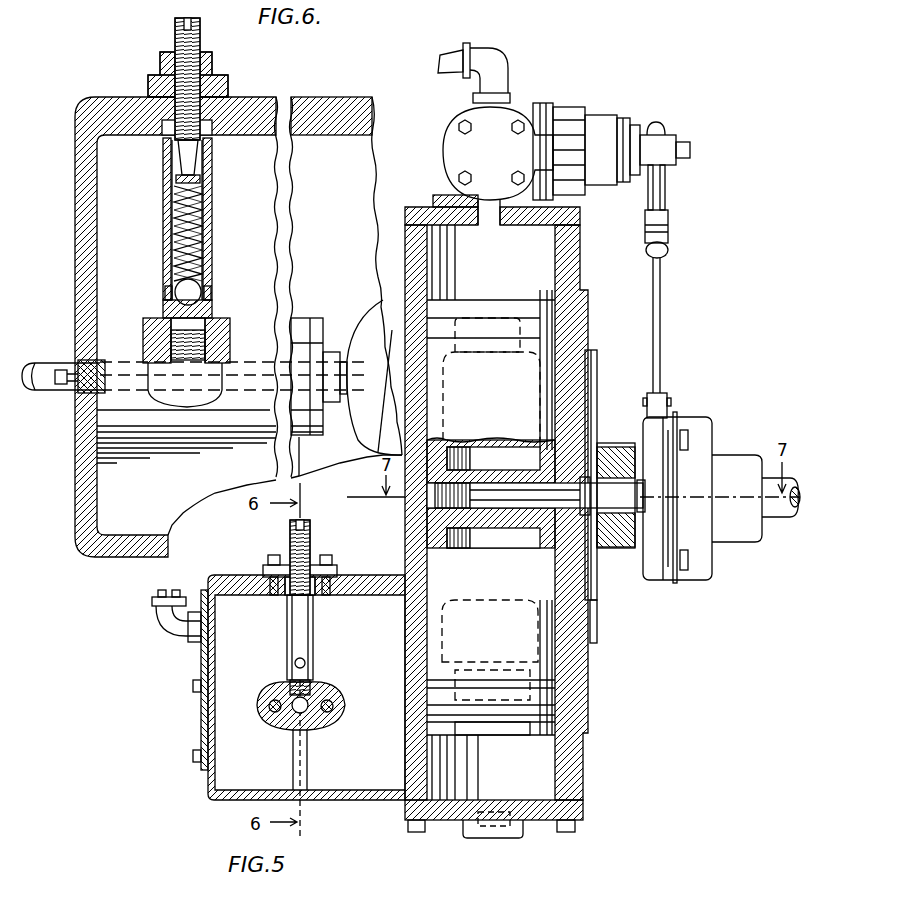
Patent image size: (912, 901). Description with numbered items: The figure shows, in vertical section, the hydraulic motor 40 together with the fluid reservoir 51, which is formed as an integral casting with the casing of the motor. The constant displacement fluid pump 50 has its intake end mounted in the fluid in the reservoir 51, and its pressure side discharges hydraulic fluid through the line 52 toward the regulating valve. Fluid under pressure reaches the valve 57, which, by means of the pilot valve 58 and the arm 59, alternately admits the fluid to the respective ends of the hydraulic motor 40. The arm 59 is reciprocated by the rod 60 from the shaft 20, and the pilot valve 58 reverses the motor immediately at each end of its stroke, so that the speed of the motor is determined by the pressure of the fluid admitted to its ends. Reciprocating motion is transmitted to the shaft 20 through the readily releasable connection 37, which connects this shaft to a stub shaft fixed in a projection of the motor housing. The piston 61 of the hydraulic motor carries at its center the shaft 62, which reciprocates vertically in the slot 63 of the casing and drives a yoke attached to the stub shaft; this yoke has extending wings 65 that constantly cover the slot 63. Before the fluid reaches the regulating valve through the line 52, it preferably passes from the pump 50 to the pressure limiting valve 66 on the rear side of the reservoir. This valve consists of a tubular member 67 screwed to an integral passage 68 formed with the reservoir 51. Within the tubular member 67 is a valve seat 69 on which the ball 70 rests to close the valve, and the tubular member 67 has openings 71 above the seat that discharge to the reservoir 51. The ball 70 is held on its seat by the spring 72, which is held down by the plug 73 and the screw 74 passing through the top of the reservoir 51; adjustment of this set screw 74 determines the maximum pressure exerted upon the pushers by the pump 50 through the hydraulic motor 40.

In FIG. 5, the shaft 20 is at (776, 517).
In FIG. 5, the readily releasable connection 37 is at (680, 417).
In FIG. 5, the hydraulic motor 40 is at (578, 246).
In FIG. 6, the constant displacement fluid pump 50 is at (377, 328).
In FIG. 6, the fluid reservoir 51 is at (125, 557).
In FIG. 5, the fluid reservoir 51 is at (208, 800).
In FIG. 6, the line 52 is at (52, 393).
In FIG. 5, the valve 57 is at (495, 134).
In FIG. 5, the pilot valve 58 is at (572, 112).
In FIG. 5, the arm 59 is at (668, 195).
In FIG. 5, the rod 60 is at (662, 293).
In FIG. 5, the piston 61 is at (498, 292).
In FIG. 5, the shaft 62 is at (518, 488).
In FIG. 5, the slot 63 is at (570, 422).
In FIG. 5, the wings 65 is at (600, 604).
In FIG. 6, the pressure limiting valve 66 is at (163, 157).
In FIG. 5, the pressure limiting valve 66 is at (315, 628).
In FIG. 6, the tubular member 67 is at (213, 177).
In FIG. 6, the integral passage 68 is at (163, 368).
In FIG. 5, the integral passage 68 is at (282, 728).
In FIG. 6, the valve seat 69 is at (202, 305).
In FIG. 6, the ball 70 is at (194, 284).
In FIG. 6, the openings 71 is at (208, 293).
In FIG. 6, the spring 72 is at (205, 191).
In FIG. 6, the plug 73 is at (205, 147).
In FIG. 6, the screw 74 is at (202, 43).
In FIG. 5, the screw 74 is at (312, 545).